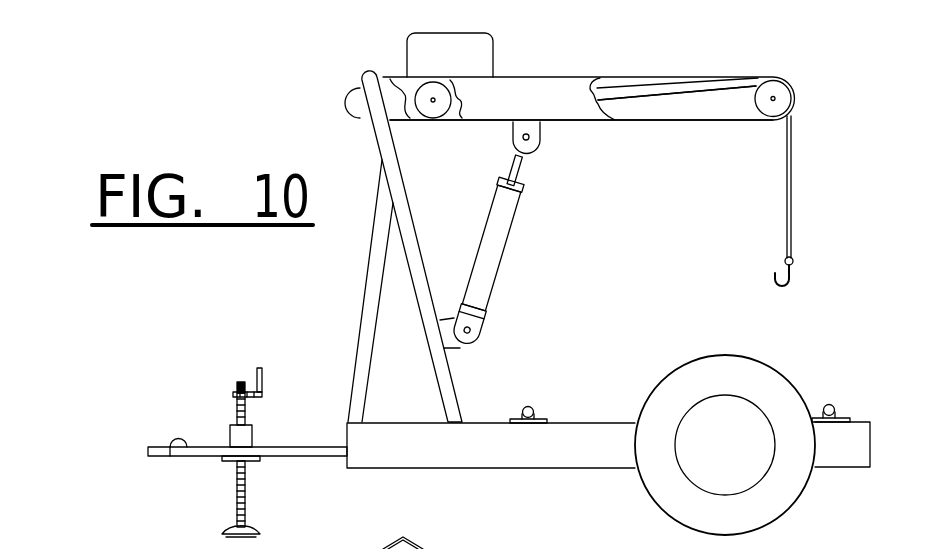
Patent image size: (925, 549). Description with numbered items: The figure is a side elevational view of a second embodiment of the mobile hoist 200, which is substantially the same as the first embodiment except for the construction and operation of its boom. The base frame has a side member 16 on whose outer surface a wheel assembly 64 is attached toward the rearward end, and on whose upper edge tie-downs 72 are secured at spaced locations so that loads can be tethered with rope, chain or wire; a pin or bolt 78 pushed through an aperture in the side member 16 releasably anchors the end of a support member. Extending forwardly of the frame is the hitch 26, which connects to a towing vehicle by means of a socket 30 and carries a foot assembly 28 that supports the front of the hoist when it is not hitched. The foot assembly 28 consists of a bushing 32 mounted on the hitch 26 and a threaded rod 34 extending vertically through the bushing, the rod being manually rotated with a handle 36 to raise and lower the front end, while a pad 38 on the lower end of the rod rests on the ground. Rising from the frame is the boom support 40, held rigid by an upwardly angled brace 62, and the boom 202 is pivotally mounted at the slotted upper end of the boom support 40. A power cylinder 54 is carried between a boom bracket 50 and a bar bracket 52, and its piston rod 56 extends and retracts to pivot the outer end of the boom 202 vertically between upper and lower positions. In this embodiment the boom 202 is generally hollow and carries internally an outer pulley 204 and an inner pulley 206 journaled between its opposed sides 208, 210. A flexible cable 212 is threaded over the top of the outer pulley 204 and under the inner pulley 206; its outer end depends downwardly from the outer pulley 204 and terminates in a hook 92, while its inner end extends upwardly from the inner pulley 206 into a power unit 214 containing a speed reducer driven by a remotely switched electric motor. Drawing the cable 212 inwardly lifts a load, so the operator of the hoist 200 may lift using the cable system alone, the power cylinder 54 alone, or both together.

The side member 16 is at (503, 462).
The hitch 26 is at (193, 456).
The foot assembly 28 is at (203, 457).
The socket 30 is at (175, 440).
The bushing 32 is at (232, 437).
The threaded rod 34 is at (247, 496).
The handle 36 is at (262, 394).
The pad 38 is at (259, 533).
The boom support 40 is at (448, 408).
The boom bracket 50 is at (517, 142).
The bar bracket 52 is at (463, 341).
The power cylinder 54 is at (496, 218).
The piston rod 56 is at (521, 168).
The brace 62 is at (378, 233).
The wheel assembly 64 is at (618, 500).
The tie-down 72 is at (532, 407).
The pin or bolt 78 is at (856, 438).
The hook 92 is at (790, 285).
The hoist 200 is at (540, 225).
The boom 202 is at (555, 78).
The outer pulley 204 is at (807, 48).
The inner pulley 206 is at (424, 108).
The side of boom 208 is at (673, 108).
The side of boom 210 is at (548, 112).
The flexible cable 212 is at (388, 78).
The power unit 214 is at (480, 31).